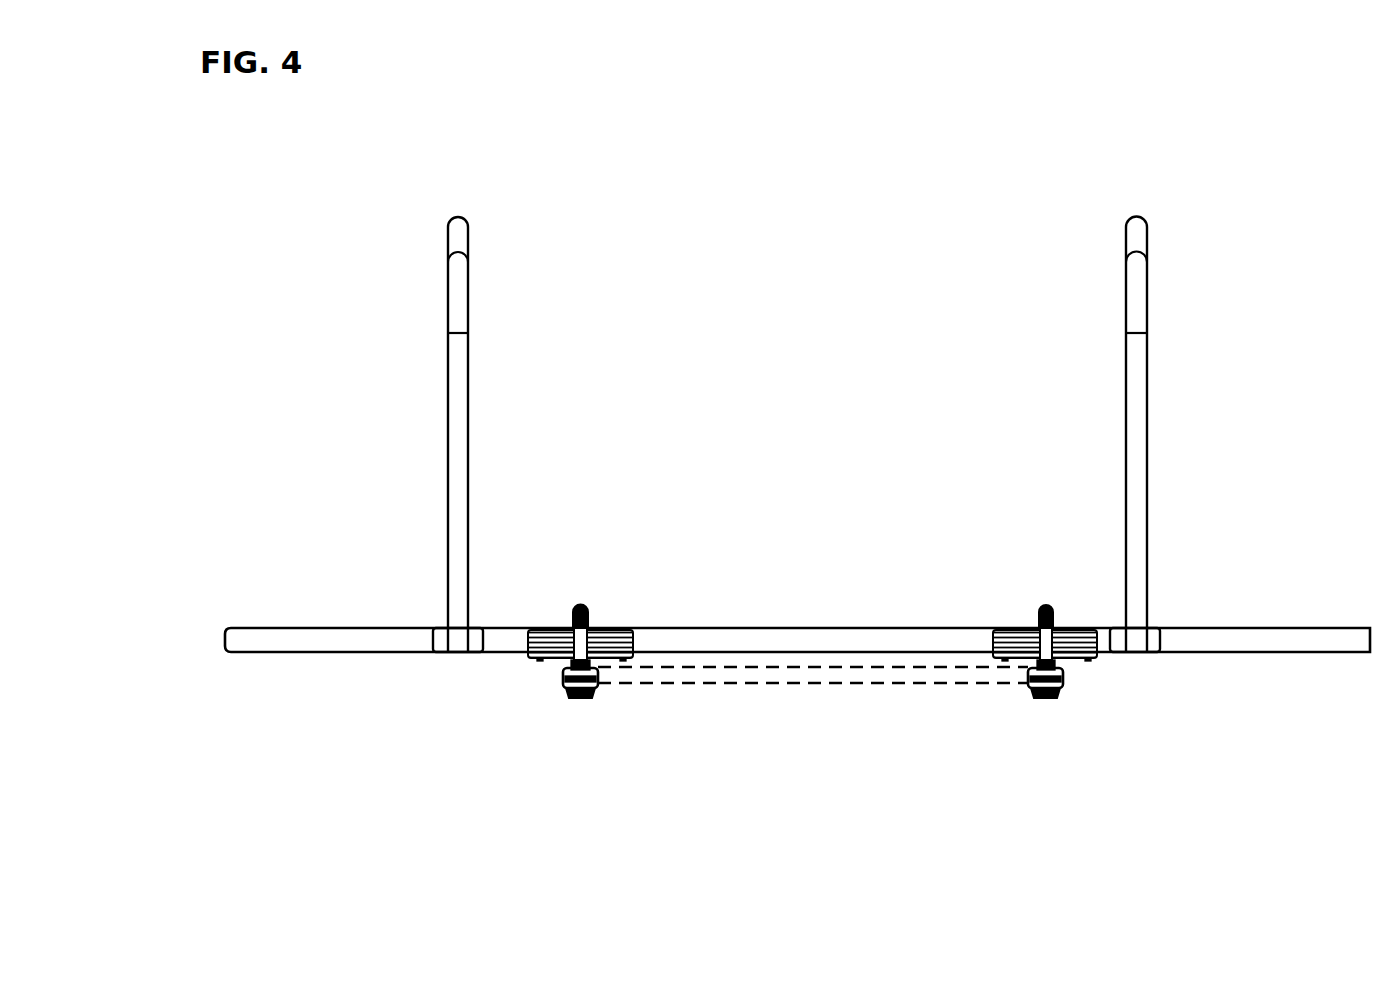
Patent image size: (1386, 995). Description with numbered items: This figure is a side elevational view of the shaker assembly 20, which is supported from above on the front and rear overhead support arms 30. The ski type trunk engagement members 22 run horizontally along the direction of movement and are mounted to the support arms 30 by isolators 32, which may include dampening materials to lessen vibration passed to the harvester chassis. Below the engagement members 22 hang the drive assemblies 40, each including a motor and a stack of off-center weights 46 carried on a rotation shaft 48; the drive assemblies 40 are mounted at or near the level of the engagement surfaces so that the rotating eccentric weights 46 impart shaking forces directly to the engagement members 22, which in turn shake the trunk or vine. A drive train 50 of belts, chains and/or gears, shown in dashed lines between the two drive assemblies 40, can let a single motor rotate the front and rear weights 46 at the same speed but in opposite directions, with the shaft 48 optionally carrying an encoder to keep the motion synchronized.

The shaker assembly 20 is at (1180, 162).
The ski type trunk engagement members 22 is at (1250, 640).
The overhead support arms 30 is at (458, 288).
The isolators 32 is at (473, 640).
The drive assemblies 40 is at (608, 709).
The weights 46 is at (610, 645).
The rotation shaft 48 is at (583, 608).
The drive train 50 is at (750, 685).